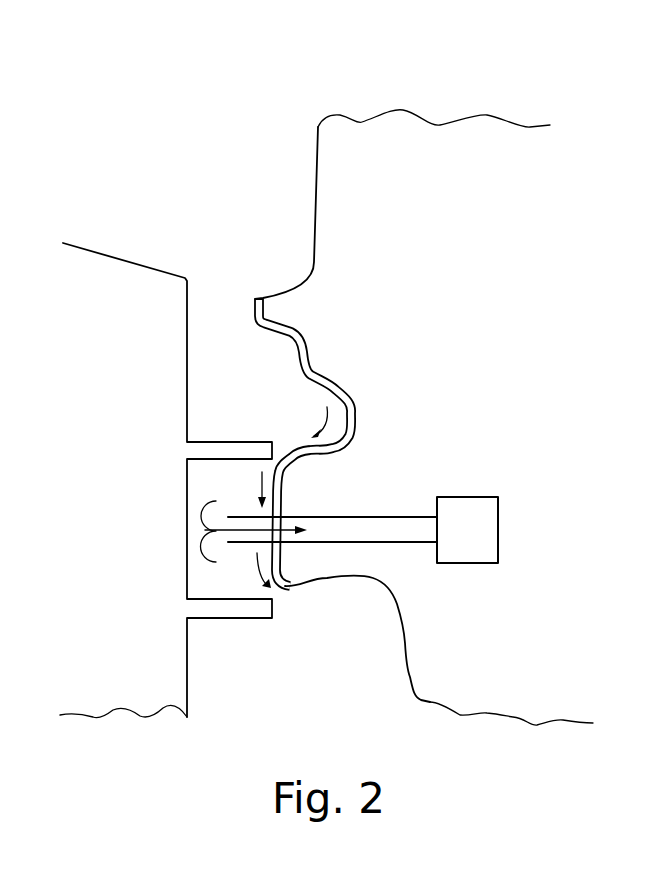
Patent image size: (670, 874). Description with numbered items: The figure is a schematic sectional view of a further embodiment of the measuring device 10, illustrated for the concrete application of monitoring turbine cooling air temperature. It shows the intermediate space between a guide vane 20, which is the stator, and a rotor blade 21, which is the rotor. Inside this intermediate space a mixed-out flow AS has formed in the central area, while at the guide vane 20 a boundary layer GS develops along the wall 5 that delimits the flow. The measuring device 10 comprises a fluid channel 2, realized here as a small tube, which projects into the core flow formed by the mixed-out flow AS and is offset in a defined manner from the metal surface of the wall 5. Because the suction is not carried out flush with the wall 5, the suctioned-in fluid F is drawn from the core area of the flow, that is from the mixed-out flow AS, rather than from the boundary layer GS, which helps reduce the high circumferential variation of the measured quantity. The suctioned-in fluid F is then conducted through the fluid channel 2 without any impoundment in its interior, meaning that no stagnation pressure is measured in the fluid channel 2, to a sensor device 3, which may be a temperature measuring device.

The guide vane 20 is at (478, 128).
The rotor blade 21 is at (85, 268).
The measuring device 10 is at (411, 466).
The fluid channel 2 is at (380, 543).
The sensor device 3 is at (498, 530).
The wall of the flow 5 is at (323, 583).
The boundary layer flow GS is at (288, 333).
The mixed-out flow AS is at (262, 425).
The suctioned-in fluid F is at (286, 528).